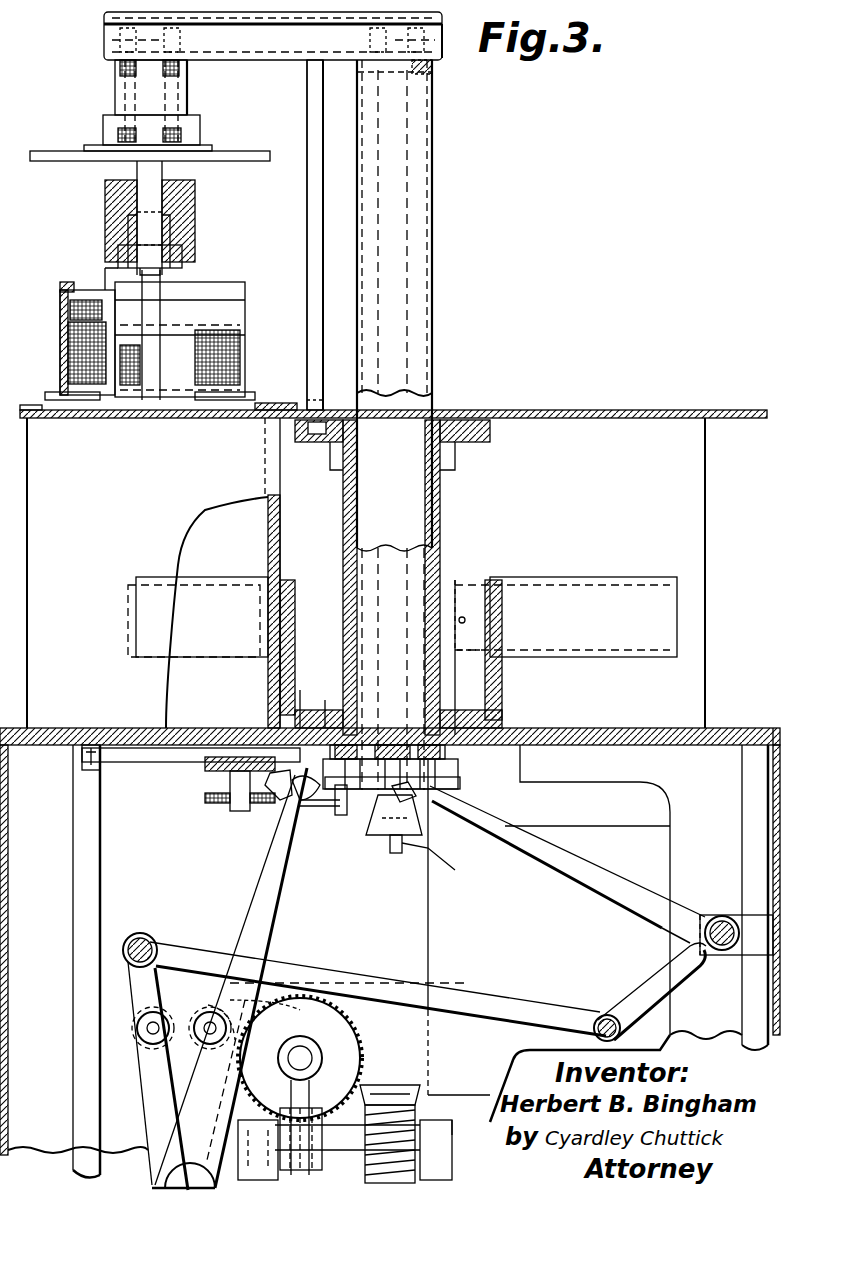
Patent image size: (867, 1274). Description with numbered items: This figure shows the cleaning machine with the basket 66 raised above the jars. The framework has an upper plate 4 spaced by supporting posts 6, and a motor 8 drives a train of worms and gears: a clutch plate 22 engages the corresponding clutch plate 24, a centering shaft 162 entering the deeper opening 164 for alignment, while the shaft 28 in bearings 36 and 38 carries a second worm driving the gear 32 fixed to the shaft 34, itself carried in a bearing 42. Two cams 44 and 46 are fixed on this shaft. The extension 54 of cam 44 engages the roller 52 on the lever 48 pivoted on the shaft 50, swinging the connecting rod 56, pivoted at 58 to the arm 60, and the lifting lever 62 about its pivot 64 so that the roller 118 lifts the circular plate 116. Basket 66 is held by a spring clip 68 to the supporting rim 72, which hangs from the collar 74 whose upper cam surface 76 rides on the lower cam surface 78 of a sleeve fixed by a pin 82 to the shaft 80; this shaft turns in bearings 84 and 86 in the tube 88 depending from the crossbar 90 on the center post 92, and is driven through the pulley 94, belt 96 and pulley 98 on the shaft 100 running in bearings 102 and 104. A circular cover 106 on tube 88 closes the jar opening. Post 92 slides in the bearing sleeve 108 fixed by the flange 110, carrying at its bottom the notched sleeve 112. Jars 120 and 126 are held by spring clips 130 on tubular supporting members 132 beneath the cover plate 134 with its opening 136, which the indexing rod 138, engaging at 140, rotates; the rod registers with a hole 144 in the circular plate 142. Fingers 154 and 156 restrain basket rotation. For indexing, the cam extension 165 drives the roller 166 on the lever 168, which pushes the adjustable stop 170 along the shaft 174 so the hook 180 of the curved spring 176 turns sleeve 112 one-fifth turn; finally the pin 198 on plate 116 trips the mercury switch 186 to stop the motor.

The upper plate 4 is at (728, 728).
The supporting and spacing posts 6 is at (73, 865).
The motor 8 is at (660, 800).
The clutch plate 22 is at (428, 1095).
The clutch plate 24 is at (370, 836).
The shaft 28 is at (350, 1150).
The gear 32 is at (360, 1040).
The shaft 34 is at (300, 1058).
The bearing 36 is at (490, 1120).
The bearing 38 is at (258, 1130).
The bearing 42 is at (318, 1088).
The cam 44 is at (230, 1095).
The cam 46 is at (325, 998).
The lever 48 is at (148, 1088).
The shaft 50 is at (165, 1175).
The roller 52 is at (140, 1050).
The extension 54 is at (185, 972).
The connecting rod 56 is at (505, 1005).
The pivot 58 is at (600, 1015).
The arm 60 is at (640, 972).
The lifting lever 62 is at (604, 886).
The pivot 64 is at (722, 915).
The basket 66 is at (232, 350).
The spring clip 68 is at (152, 352).
The supporting rim 72 is at (242, 285).
The collar 74 is at (195, 198).
The upper cam surface 76 is at (172, 238).
The lower cam surface 78 is at (182, 258).
The shaft 80 is at (162, 168).
The pin 82 is at (105, 275).
The bearing 84 is at (195, 112).
The bearing 86 is at (187, 76).
The tube 88 is at (115, 85).
The crossbar 90 is at (290, 60).
The center post 92 is at (432, 246).
The pulley 94 is at (104, 43).
The belt 96 is at (268, 60).
The pulley 98 is at (442, 45).
The shaft 100 is at (407, 188).
The bearing 102 is at (432, 72).
The bearing 104 is at (370, 812).
The circular cover 106 is at (256, 151).
The bearing sleeve 108 is at (440, 518).
The flange 110 is at (470, 712).
The sleeve 112 is at (384, 745).
The circular plate 116 is at (458, 782).
The roller 118 is at (392, 840).
The jar 120 is at (695, 530).
The jar 126 is at (282, 540).
The spring clip 130 is at (148, 577).
The tubular supporting member 132 is at (502, 672).
The cover plate 134 is at (728, 410).
The opening 136 is at (260, 408).
The indexing rod 138 is at (307, 210).
The engagement point 140 is at (265, 440).
The circular plate 142 is at (490, 432).
The hole 144 is at (315, 442).
The finger 154 is at (50, 392).
The finger 156 is at (248, 392).
The centering shaft 162 is at (438, 865).
The opening 164 is at (392, 1085).
The cam extension 165 is at (268, 990).
The roller 166 is at (215, 1050).
The lever 168 is at (242, 912).
The adjustable stop 170 is at (258, 811).
The shaft 174 is at (148, 762).
The curved spring 176 is at (445, 757).
The hook 180 is at (418, 790).
The mercury switch 186 is at (305, 728).
The pin 198 is at (275, 790).